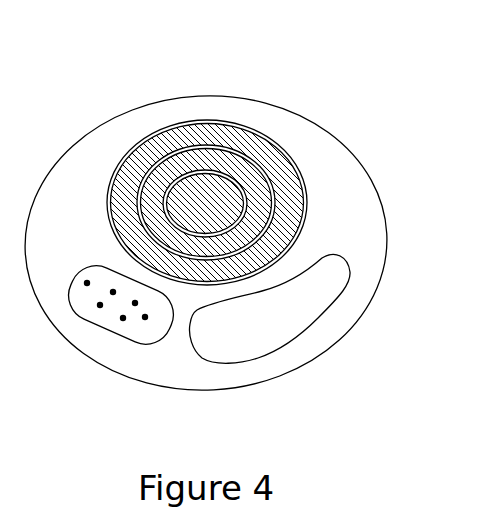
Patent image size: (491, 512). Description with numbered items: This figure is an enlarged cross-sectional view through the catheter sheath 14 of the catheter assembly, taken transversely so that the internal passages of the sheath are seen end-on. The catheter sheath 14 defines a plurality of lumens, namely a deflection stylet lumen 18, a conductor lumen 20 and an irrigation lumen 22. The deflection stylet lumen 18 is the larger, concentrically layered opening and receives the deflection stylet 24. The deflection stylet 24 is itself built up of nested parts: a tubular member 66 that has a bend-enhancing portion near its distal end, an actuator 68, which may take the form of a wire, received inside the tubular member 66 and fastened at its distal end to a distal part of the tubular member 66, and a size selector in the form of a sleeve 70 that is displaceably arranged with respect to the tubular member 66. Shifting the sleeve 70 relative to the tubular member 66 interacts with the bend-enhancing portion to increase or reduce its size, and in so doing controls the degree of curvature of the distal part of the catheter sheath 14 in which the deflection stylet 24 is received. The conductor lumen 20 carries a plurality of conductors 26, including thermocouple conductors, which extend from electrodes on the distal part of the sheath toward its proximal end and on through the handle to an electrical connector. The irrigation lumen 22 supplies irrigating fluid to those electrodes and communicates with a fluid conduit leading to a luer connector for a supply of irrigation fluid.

The catheter sheath 14 is at (385, 217).
The deflection stylet lumen 18 is at (229, 124).
The conductor lumen 20 is at (127, 345).
The irrigation lumen 22 is at (300, 337).
The deflection stylet 24 is at (277, 140).
The conductors 26 is at (87, 283).
The tubular member 66 is at (154, 201).
The actuator 68 is at (203, 199).
The sleeve 70 is at (288, 189).